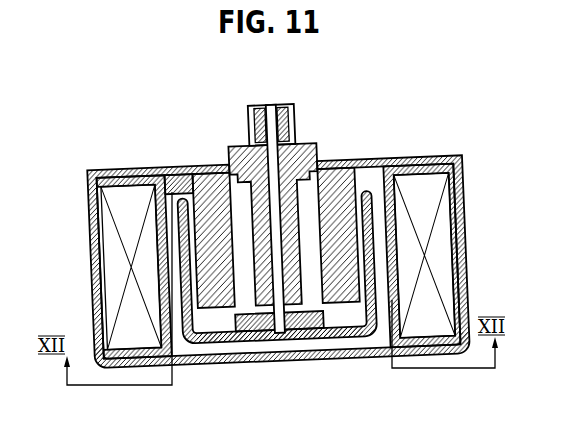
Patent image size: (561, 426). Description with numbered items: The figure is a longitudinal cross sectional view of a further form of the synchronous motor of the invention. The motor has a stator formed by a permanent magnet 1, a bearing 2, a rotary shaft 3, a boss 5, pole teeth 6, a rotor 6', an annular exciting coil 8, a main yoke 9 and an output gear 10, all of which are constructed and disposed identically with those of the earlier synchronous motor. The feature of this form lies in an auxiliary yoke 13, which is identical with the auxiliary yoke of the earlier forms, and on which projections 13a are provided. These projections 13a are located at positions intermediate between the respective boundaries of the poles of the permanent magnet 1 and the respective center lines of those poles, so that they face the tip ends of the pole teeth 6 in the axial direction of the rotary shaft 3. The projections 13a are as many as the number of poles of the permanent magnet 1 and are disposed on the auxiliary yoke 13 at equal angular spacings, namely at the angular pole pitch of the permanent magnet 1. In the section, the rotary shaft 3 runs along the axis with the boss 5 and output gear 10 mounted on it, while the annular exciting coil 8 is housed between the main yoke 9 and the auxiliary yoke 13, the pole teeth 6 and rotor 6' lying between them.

The permanent magnet 1 is at (339, 178).
The bearing 2 is at (297, 157).
The rotary shaft 3 is at (270, 110).
The boss 5 is at (288, 328).
The pole teeth 6 is at (336, 267).
The rotor 6' is at (280, 362).
The annular exciting coil 8 is at (426, 262).
The main yoke 9 is at (223, 358).
The output gear 10 is at (254, 114).
The auxiliary yoke 13 is at (407, 159).
The projection 13a is at (175, 183).